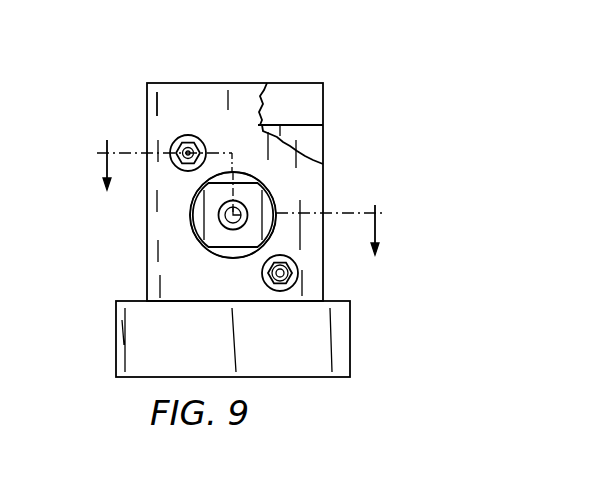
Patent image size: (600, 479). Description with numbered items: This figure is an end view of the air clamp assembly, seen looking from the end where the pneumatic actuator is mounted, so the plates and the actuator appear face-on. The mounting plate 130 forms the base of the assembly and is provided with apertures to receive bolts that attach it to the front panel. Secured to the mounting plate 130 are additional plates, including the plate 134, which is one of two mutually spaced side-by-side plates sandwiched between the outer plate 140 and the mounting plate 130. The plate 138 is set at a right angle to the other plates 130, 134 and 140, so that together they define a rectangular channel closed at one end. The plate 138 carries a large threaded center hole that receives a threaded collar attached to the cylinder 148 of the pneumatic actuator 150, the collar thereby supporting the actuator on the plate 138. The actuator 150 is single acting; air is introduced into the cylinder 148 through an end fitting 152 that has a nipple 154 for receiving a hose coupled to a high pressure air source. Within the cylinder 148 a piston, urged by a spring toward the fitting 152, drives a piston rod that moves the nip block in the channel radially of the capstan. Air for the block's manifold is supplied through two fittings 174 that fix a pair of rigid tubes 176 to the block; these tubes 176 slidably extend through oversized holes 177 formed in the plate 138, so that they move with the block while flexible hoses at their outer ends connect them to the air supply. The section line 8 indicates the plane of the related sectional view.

The section line 8- 8 is at (239, 194).
The mounting plate 130 is at (116, 316).
The plate 134 is at (323, 143).
The plate 138 is at (157, 95).
The plate 140 is at (323, 98).
The cylinder 148 is at (275, 226).
The pneumatic actuator 150 is at (190, 240).
The end fitting 152 is at (268, 190).
The nipple 154 is at (224, 212).
The fittings 174 is at (178, 143).
The tubes 176 is at (171, 150).
The holes 177 is at (196, 137).